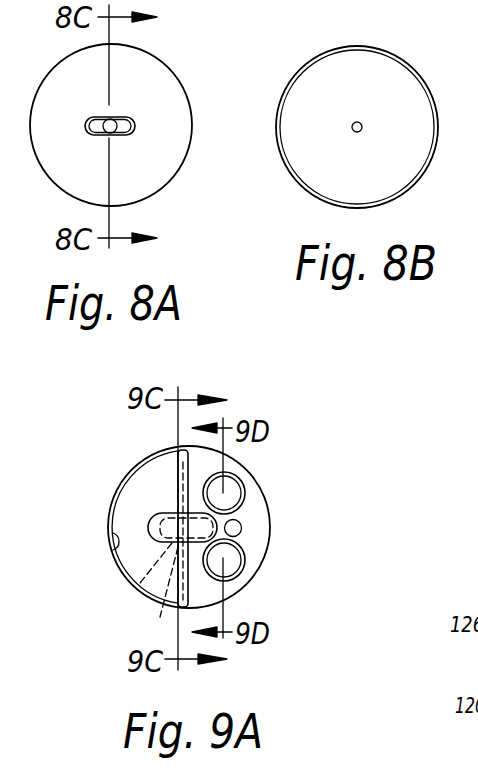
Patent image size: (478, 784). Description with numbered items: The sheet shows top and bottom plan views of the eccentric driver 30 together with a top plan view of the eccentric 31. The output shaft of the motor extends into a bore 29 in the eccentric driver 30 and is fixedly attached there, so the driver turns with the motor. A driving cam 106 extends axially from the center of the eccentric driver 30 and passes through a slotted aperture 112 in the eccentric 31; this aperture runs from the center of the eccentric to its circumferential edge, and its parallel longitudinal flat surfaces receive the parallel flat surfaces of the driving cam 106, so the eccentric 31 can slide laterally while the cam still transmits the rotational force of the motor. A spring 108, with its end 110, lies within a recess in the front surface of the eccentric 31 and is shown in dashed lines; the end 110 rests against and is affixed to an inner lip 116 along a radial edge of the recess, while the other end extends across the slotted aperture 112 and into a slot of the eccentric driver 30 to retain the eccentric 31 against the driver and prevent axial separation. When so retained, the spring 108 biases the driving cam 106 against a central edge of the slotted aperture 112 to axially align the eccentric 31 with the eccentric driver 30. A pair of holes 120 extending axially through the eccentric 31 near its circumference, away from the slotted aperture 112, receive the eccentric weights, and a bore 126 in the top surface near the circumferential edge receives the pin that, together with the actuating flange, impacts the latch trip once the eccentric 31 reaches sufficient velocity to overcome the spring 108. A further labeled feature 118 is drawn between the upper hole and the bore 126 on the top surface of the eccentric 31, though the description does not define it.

In FIG. 8A, the bore 29 is at (110, 133).
In FIG. 8B, the bore 29 is at (357, 122).
In FIG. 8A, the eccentric driver 30 is at (142, 70).
In FIG. 8B, the eccentric driver 30 is at (377, 65).
In FIG. 9A, the eccentric 31 is at (220, 461).
In FIG. 9A, the driving cam 106 is at (142, 572).
In FIG. 9A, the spring 108 is at (173, 468).
In FIG. 9A, the end 110 is at (172, 610).
In FIG. 9A, the slotted aperture 112 is at (148, 524).
In FIG. 9A, the inner lip 116 is at (113, 548).
In FIG. 9A, the gap region 118 is at (240, 516).
In FIG. 9A, the holes 120 is at (232, 493).
In FIG. 9A, the bore 126 is at (243, 530).